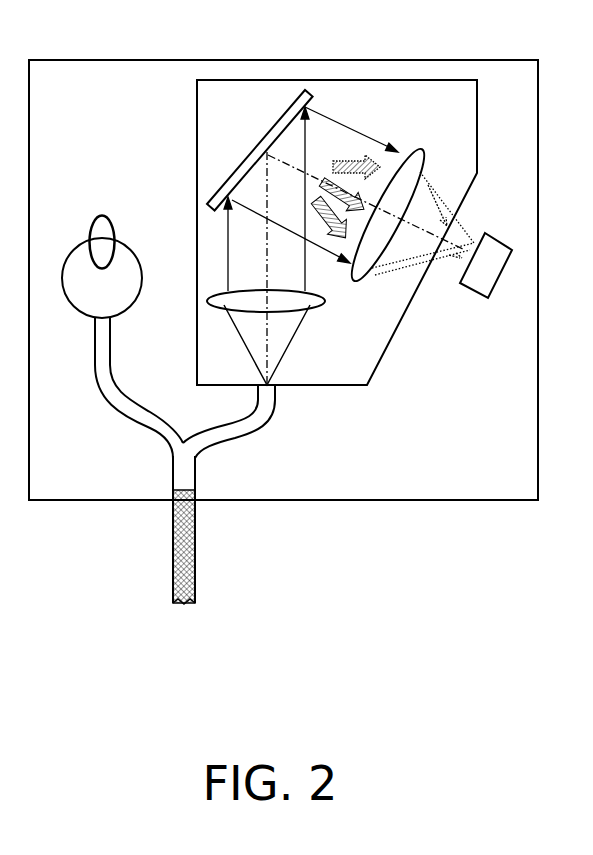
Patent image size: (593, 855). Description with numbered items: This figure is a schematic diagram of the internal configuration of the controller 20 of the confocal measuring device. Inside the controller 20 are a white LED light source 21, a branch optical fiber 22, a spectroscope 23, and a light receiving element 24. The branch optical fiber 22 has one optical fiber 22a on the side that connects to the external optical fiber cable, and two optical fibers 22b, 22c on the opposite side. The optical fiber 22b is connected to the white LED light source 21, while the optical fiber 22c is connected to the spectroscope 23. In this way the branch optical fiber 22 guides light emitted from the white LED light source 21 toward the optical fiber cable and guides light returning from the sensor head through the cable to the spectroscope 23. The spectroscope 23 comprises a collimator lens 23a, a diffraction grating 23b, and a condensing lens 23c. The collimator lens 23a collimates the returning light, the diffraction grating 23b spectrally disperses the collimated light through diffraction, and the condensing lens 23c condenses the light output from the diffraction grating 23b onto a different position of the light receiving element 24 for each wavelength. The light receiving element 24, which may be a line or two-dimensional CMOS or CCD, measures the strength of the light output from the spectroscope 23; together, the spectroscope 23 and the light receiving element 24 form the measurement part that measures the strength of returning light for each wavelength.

The controller 20 is at (285, 59).
The white LED light source 21 is at (136, 256).
The branch optical fiber 22 is at (180, 461).
The optical fiber 22a is at (172, 465).
The optical fiber 22b is at (97, 372).
The optical fiber 22c is at (264, 416).
The spectroscope 23 is at (197, 118).
The collimator lens 23a is at (316, 309).
The diffraction grating 23b is at (275, 125).
The condensing lens 23c is at (421, 148).
The light receiving element 24 is at (487, 233).